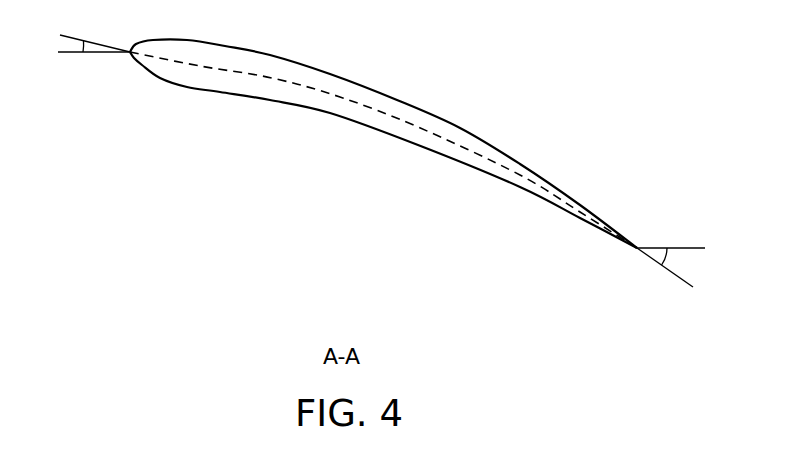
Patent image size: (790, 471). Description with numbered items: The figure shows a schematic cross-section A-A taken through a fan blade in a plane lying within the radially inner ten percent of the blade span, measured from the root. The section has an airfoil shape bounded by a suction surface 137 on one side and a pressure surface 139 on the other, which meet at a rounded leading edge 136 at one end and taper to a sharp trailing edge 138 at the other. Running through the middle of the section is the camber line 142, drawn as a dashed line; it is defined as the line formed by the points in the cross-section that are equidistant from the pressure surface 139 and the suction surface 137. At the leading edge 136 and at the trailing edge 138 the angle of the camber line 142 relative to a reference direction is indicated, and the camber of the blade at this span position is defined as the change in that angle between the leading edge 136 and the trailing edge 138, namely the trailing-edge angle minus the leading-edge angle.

The leading edge 136 is at (130, 53).
The suction surface 137 is at (400, 100).
The trailing edge 138 is at (637, 250).
The pressure surface 139 is at (418, 146).
The camber line 142 is at (272, 78).